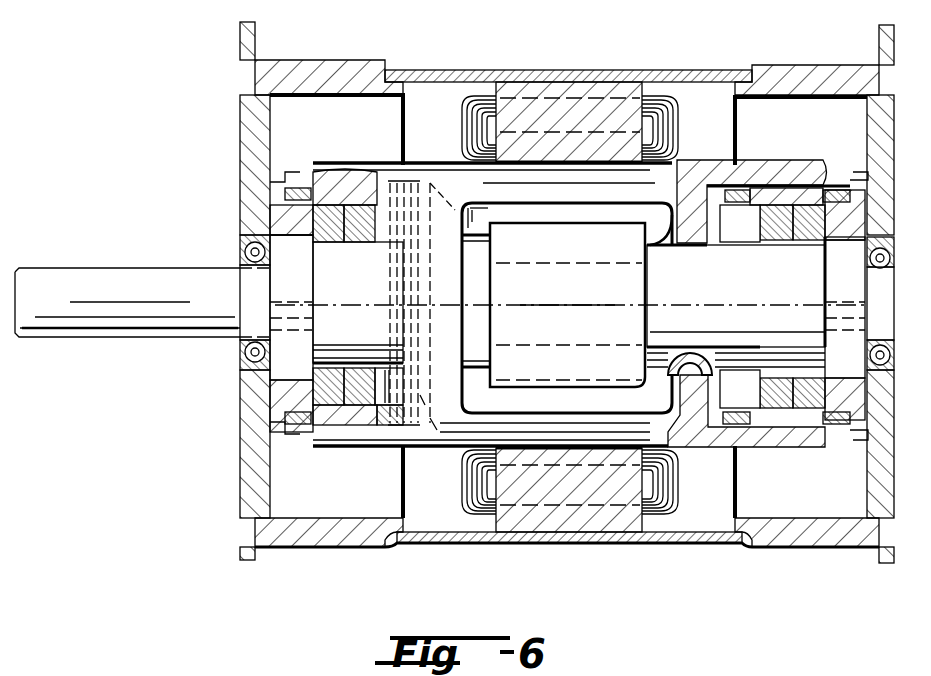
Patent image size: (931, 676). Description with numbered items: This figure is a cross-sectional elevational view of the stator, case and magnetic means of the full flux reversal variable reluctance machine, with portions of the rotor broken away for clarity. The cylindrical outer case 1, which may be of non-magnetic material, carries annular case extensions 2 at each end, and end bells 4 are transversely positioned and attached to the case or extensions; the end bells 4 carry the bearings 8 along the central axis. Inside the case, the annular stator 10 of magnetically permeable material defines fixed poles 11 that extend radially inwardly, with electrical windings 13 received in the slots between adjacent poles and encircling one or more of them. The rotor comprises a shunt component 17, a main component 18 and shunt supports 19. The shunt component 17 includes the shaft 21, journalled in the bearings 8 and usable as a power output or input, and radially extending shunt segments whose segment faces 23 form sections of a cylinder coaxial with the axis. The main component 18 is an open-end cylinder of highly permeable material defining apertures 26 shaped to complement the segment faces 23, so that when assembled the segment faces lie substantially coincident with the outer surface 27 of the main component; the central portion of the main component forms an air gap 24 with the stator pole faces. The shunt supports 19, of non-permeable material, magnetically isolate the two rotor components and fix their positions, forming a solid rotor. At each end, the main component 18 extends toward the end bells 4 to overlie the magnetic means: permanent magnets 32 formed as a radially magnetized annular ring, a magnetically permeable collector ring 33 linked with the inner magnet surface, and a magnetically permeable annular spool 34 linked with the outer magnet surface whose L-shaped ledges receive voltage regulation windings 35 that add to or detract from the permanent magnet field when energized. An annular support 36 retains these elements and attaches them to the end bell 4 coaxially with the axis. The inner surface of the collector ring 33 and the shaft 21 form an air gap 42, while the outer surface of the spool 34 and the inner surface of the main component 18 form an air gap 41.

The cylindrical outer case 1 is at (452, 72).
The annular case extensions 2 is at (822, 78).
The end bells 4 is at (882, 140).
The bearings 8 is at (242, 252).
The stator 10 is at (588, 289).
The fixed poles 11 is at (600, 112).
The electrical windings 13 is at (662, 118).
The shunt component 17 is at (166, 337).
The main component 18 is at (565, 192).
The shunt supports 19 is at (468, 318).
The shaft 21 is at (100, 268).
The segment faces 23 is at (582, 292).
The air gap 24 is at (630, 163).
The apertures 26 is at (655, 230).
The outer surface 27 is at (462, 284).
The permanent magnets 32 is at (750, 225).
The collector ring 33 is at (340, 350).
The annular spool 34 is at (797, 192).
The voltage regulation windings 35 is at (738, 190).
The annular support 36 is at (872, 180).
The air gap 41 is at (300, 188).
The air gap 42 is at (305, 240).